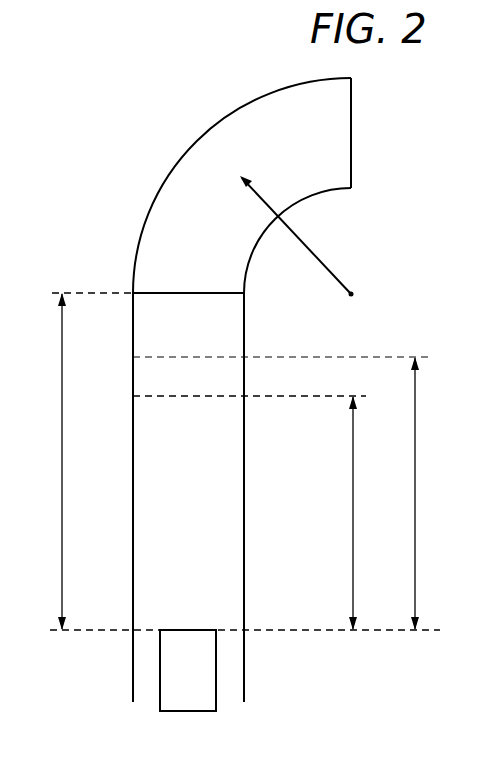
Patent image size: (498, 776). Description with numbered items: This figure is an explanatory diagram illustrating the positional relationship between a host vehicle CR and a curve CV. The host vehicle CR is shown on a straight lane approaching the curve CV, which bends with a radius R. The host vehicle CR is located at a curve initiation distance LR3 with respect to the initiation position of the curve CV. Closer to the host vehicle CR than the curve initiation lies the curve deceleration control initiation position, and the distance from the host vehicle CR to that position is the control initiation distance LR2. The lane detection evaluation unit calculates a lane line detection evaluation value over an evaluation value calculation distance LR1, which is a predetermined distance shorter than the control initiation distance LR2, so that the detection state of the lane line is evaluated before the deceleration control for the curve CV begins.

The curve CV is at (169, 171).
The radius R is at (297, 236).
The evaluation value calculation distance LR1 is at (267, 513).
The control initiation distance LR2 is at (298, 493).
The curve initiation distance LR3 is at (227, 461).
The host vehicle CR is at (160, 677).